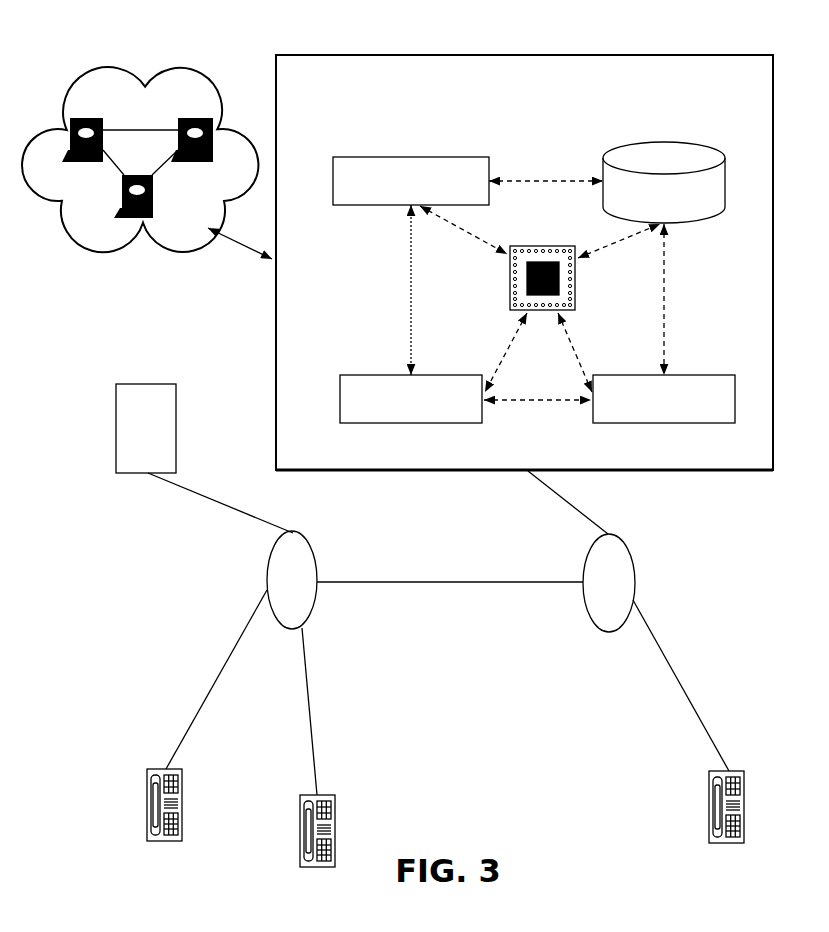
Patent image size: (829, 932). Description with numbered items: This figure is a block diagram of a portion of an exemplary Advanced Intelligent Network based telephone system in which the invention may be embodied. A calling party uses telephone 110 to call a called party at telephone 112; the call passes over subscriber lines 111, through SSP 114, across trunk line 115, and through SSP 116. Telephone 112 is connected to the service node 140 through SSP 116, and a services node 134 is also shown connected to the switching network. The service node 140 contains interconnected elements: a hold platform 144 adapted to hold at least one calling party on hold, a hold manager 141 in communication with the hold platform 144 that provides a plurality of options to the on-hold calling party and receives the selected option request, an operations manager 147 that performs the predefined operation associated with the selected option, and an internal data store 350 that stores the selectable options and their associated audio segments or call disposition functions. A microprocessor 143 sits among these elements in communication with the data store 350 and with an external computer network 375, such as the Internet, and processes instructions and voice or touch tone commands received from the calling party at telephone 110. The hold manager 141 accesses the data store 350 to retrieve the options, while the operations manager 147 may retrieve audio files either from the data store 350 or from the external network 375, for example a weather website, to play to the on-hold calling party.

The external computer network 375 is at (193, 72).
The service node 140 is at (638, 472).
The operations manager 147 is at (413, 157).
The data store 350 is at (663, 160).
The microprocessor 143 is at (545, 246).
The hold platform 144 is at (390, 375).
The hold manager 141 is at (702, 375).
The services node 134 is at (146, 428).
The SSP 114 is at (292, 580).
The SSP 116 is at (609, 583).
The trunk line 115 is at (453, 583).
The subscriber lines 111 is at (190, 723).
The telephone 110 is at (241, 830).
The telephone 112 is at (726, 820).